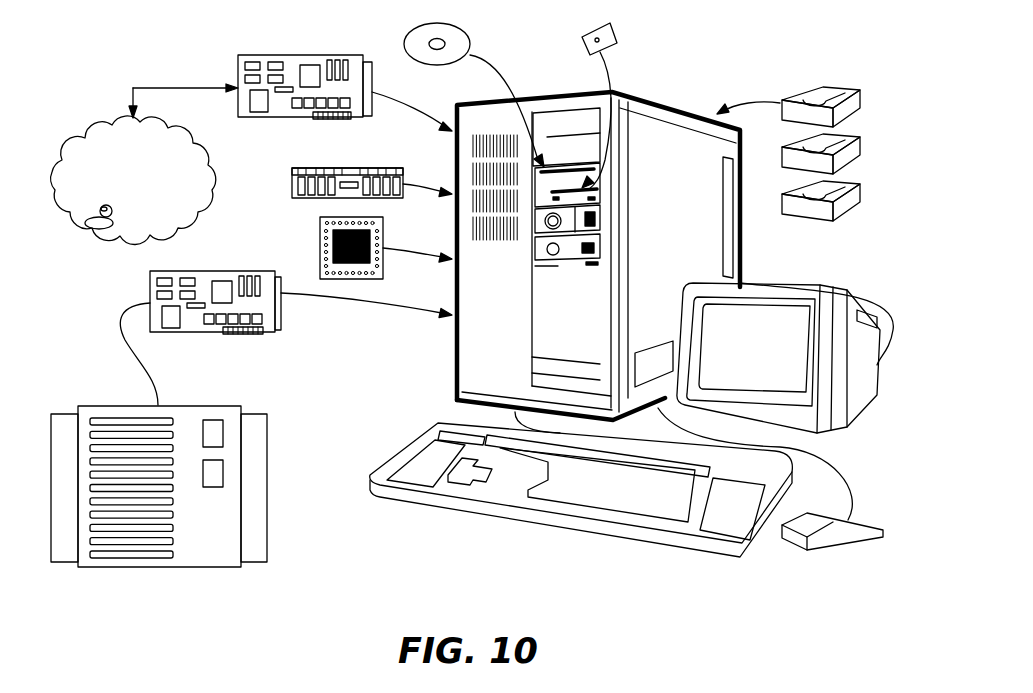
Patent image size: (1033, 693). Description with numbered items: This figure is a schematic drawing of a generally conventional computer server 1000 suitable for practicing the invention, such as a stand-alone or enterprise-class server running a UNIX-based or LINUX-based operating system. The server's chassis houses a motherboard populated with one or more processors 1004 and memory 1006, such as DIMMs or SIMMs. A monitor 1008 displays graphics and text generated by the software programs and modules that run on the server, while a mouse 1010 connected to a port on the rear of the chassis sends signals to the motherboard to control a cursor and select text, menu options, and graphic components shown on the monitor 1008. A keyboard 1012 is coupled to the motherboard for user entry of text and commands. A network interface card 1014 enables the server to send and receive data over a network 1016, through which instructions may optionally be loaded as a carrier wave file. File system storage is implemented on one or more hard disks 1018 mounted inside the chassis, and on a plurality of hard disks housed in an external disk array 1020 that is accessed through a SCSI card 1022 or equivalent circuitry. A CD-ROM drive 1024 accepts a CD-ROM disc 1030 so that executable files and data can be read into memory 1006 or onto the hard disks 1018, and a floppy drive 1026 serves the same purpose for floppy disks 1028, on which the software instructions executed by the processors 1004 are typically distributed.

The computer server 1000 is at (425, 518).
The processor 1004 is at (320, 247).
The memory 1006 is at (294, 185).
The monitor 1008 is at (860, 395).
The mouse 1010 is at (868, 540).
The keyboard 1012 is at (610, 513).
The network interface card 1014 is at (238, 64).
The network 1016 is at (178, 212).
The hard disk 1018 is at (812, 88).
The external disk array 1020 is at (262, 482).
The SCSI card 1022 is at (270, 320).
The CD-ROM drive 1024 is at (573, 163).
The floppy drive 1026 is at (597, 192).
The floppy disk 1028 is at (618, 38).
The CD-ROM disc 1030 is at (470, 40).